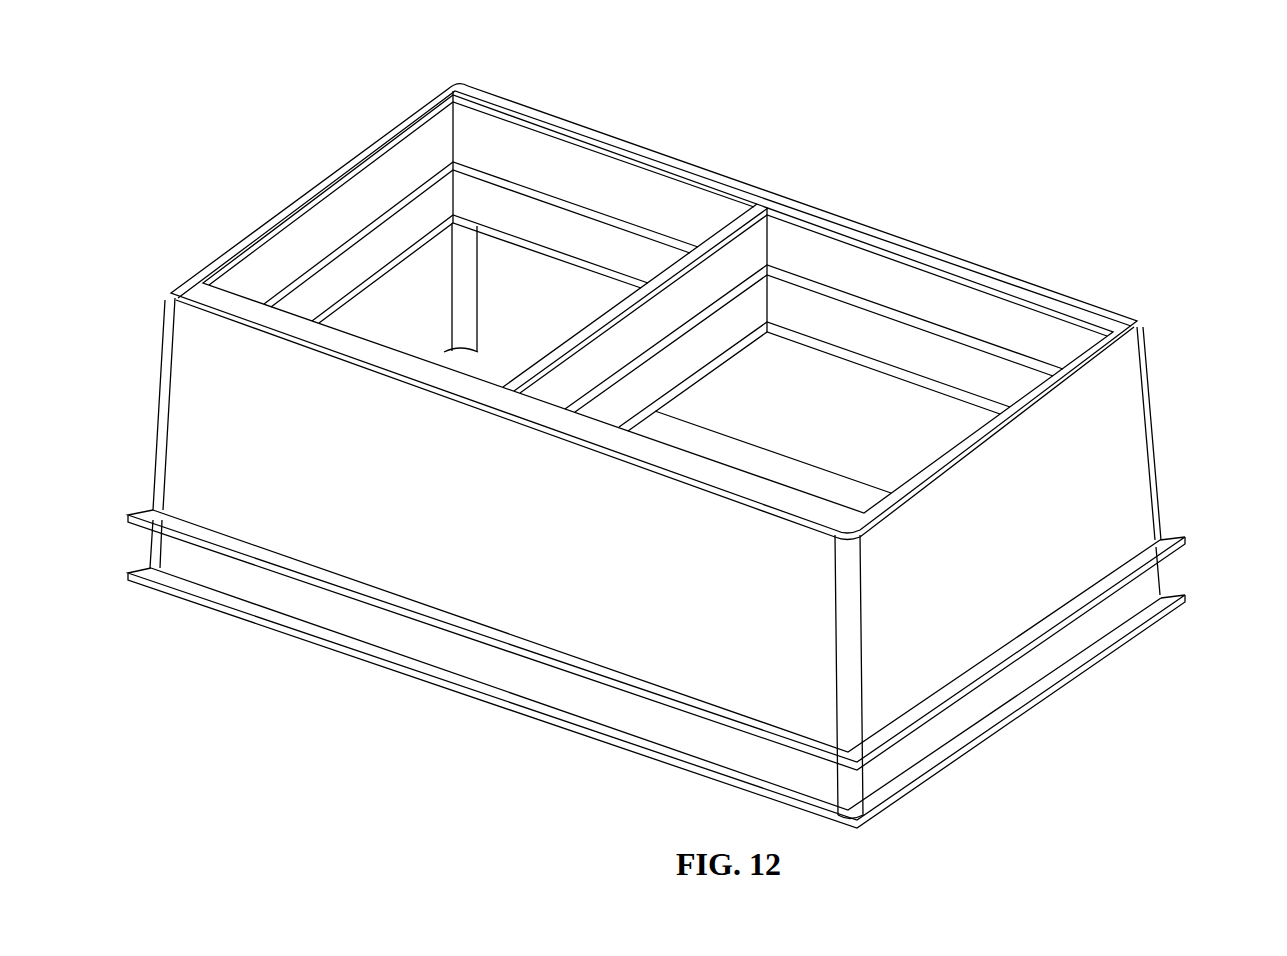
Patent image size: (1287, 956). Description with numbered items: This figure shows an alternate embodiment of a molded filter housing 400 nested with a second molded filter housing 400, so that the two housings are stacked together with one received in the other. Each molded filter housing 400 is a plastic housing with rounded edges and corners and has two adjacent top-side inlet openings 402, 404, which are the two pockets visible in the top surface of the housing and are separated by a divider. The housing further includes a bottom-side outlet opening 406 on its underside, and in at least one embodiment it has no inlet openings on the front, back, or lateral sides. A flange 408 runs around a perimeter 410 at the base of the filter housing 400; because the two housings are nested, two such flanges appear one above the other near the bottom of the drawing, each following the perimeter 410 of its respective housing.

The molded filter housing 400 is at (1147, 392).
The top-side inlet opening 402 is at (568, 154).
The top-side inlet opening 404 is at (871, 256).
The bottom-side outlet opening 406 is at (527, 733).
The flange 408 is at (1140, 632).
The perimeter 410 is at (1025, 704).